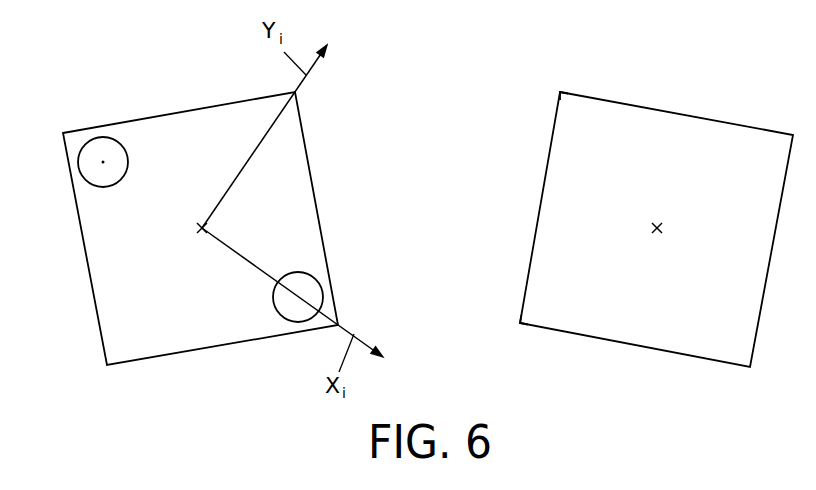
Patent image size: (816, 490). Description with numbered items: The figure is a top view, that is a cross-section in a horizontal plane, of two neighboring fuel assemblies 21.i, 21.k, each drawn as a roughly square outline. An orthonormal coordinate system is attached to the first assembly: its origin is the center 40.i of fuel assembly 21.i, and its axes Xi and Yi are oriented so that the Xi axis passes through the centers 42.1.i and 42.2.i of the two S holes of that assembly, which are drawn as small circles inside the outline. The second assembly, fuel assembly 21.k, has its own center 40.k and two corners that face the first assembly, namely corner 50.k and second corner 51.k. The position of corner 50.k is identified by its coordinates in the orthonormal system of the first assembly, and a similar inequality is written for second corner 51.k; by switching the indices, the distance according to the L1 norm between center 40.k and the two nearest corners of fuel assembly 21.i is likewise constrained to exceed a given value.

The fuel assembly 21.i is at (145, 359).
The center of fuel assembly 40.i is at (200, 226).
The center of S hole 42.2.i is at (103, 162).
The center of S hole 42.1.i is at (302, 293).
The fuel assembly 21.k is at (695, 357).
The center of fuel assembly 40.k is at (657, 227).
The second corner of fuel assembly 51.k is at (560, 92).
The corner of fuel assembly 50.k is at (520, 323).